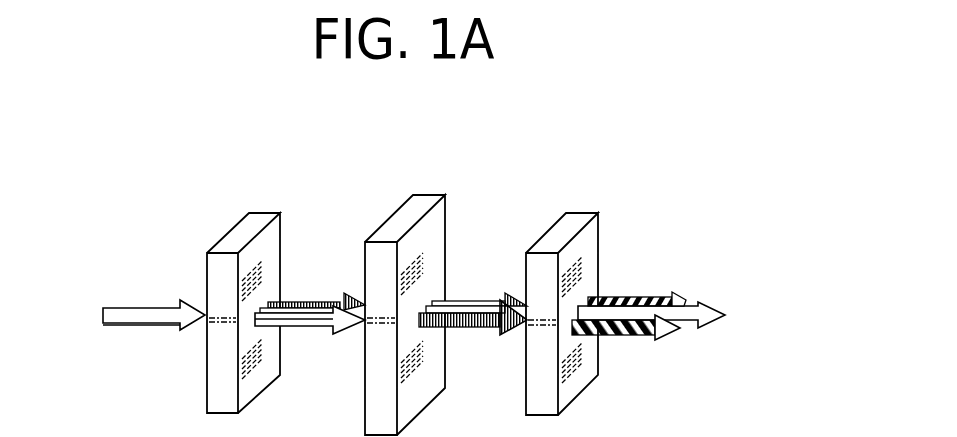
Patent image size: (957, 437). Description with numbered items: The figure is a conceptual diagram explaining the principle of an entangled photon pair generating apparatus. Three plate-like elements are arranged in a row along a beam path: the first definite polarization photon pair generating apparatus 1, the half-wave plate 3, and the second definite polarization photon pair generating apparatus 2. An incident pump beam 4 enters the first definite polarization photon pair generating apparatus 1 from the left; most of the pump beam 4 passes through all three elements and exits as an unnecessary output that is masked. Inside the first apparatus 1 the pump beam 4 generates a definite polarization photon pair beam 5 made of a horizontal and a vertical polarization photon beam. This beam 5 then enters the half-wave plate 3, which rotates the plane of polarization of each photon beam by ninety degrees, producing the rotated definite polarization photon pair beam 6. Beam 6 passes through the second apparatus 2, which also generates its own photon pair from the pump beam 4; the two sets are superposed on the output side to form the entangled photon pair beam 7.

The first definite polarization photon pair generating apparatus 1 is at (247, 233).
The second definite polarization photon pair generating apparatus 2 is at (563, 232).
The half-wave plate 3 is at (405, 218).
The incident pump beam 4 is at (147, 300).
The definite polarization photon pair beam 5 is at (317, 307).
The definite polarization photon pair beam rotated by 90 degrees 6 is at (483, 308).
The entangled photon pair beam 7 is at (660, 322).